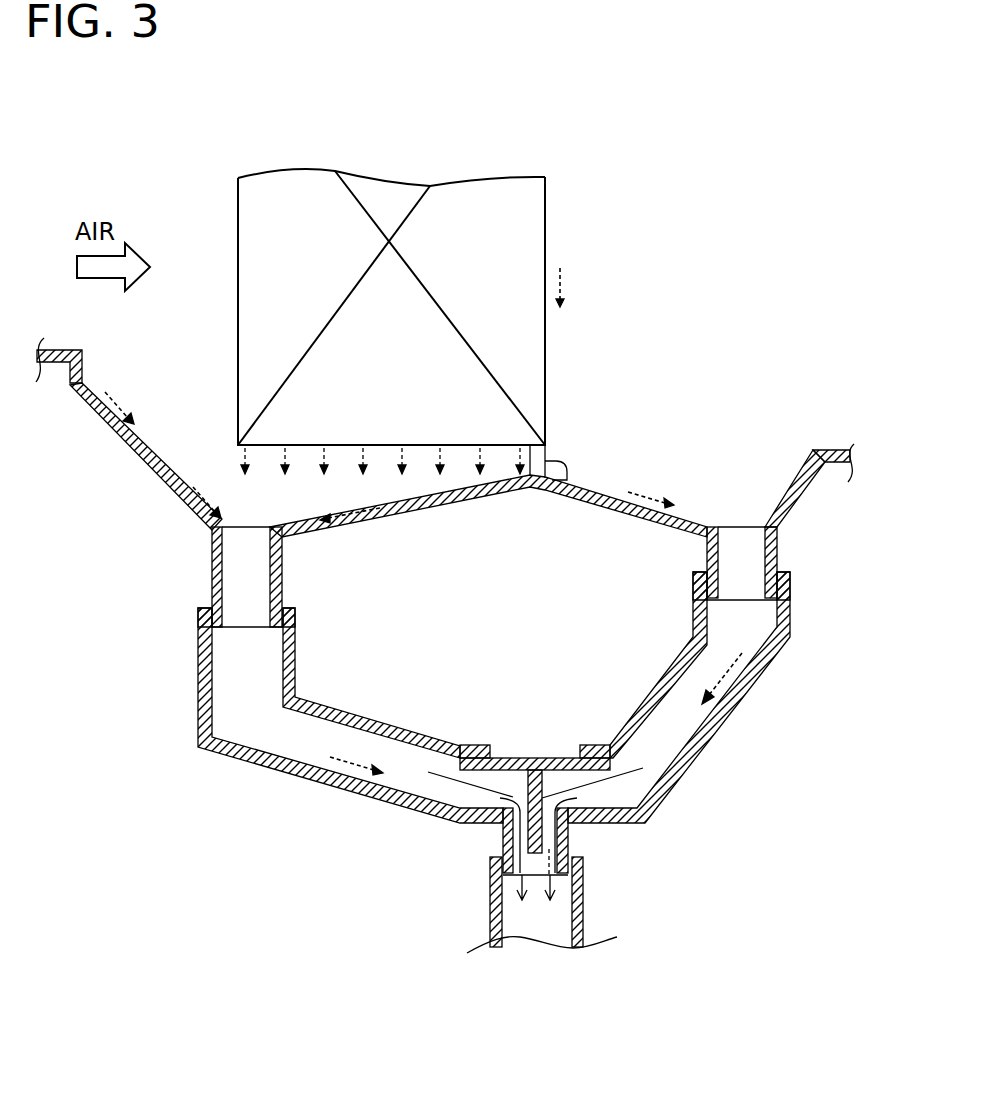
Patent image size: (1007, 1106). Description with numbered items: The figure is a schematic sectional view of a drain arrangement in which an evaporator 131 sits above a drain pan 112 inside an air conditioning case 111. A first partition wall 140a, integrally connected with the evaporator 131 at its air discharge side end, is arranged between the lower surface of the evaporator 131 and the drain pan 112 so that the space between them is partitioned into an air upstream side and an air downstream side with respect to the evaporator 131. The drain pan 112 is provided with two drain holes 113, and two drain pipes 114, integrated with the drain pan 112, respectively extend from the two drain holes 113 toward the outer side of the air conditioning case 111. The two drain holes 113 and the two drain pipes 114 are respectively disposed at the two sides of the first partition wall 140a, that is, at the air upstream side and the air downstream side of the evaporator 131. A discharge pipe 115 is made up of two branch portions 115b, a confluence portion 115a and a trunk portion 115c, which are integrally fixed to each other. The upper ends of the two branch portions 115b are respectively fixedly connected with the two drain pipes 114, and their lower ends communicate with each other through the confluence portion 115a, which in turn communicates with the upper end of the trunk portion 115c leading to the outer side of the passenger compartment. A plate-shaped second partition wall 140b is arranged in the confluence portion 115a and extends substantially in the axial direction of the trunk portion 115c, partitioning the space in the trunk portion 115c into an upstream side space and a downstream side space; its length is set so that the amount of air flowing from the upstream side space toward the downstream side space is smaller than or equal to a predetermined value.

The air conditioning case 111 is at (50, 350).
The drain pan 112 is at (115, 427).
The drain hole 113 is at (243, 533).
The drain pipe 114 is at (220, 583).
The discharge pipe 115 is at (505, 763).
The confluence portion 115a is at (525, 757).
The branch portion 115b is at (353, 787).
The trunk portion 115c is at (577, 915).
The evaporator 131 is at (292, 197).
The first partition wall 140a is at (557, 490).
The second partition wall 140b is at (542, 837).